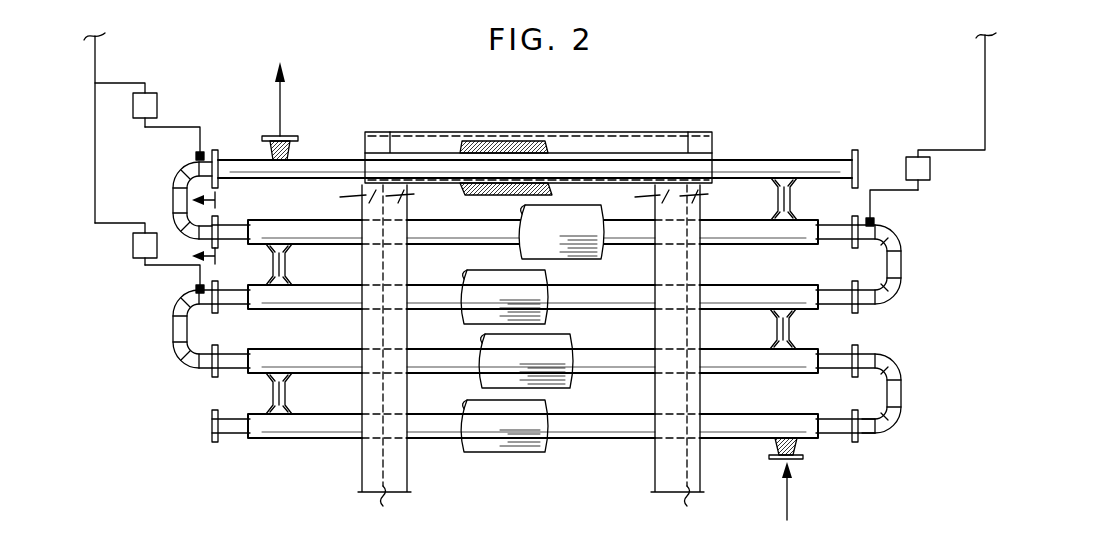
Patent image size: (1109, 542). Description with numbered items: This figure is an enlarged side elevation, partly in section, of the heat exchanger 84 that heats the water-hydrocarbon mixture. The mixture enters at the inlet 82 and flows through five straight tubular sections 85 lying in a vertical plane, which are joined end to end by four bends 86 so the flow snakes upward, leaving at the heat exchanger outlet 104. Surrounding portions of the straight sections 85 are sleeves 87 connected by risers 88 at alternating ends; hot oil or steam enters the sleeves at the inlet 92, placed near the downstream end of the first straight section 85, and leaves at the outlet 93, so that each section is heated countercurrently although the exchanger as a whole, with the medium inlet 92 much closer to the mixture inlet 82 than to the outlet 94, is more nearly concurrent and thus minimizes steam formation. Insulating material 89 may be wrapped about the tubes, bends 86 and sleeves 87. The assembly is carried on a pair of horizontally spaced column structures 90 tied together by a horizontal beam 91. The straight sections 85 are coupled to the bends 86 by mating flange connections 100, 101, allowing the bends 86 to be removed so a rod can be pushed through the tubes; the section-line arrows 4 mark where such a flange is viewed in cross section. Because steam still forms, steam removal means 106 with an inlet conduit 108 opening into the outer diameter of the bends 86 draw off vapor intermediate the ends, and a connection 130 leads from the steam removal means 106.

The section line 4- 4 is at (218, 228).
The inlet 82 is at (216, 417).
The heat exchanger 84 is at (752, 128).
The straight tubular sections 85 is at (838, 298).
The bends 86 is at (910, 249).
The sleeves 87 is at (788, 234).
The risers 88 is at (286, 266).
The insulating material 89 is at (548, 153).
The column structures 90 is at (380, 472).
The horizontal beam 91 is at (500, 134).
The inlet for heat exchanging fluid 92 is at (797, 447).
The outlet of heat exchanging fluid 93 is at (290, 138).
The outlet 94 is at (552, 228).
The flange connection 100 is at (855, 413).
The flange 101 is at (884, 431).
The heat exchanger outlet 104 is at (855, 150).
The steam removal means 106 is at (158, 100).
The inlet conduit 108 is at (182, 125).
The control line 130 is at (98, 82).